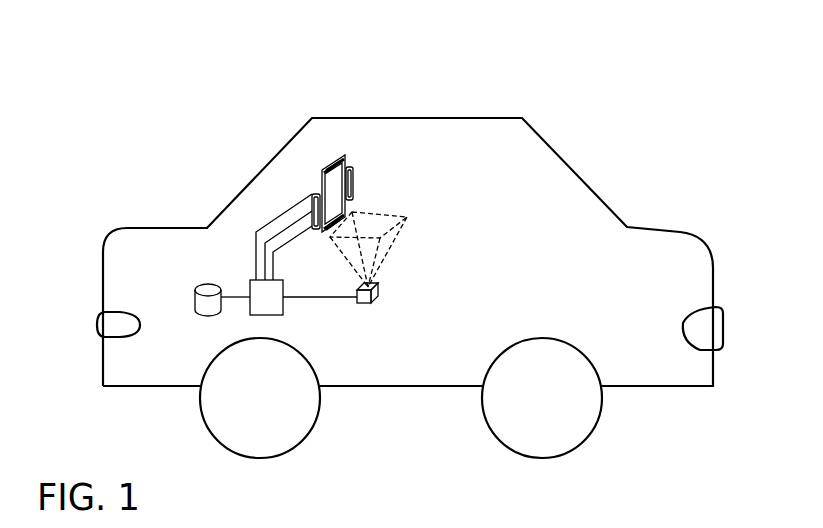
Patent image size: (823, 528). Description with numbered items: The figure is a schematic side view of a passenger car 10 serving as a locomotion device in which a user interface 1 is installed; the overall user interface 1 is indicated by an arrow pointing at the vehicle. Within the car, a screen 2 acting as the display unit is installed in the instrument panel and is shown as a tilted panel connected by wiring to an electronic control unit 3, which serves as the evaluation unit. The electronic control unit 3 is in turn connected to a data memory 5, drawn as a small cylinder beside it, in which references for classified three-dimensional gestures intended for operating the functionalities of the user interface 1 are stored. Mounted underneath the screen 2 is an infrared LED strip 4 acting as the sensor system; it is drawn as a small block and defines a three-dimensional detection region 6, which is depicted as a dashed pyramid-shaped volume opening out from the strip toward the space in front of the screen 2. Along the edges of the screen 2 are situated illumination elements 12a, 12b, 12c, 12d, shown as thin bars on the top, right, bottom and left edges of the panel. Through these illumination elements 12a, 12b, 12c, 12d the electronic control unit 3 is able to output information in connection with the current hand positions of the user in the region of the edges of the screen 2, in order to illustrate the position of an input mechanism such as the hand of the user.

The user interface 1 is at (178, 80).
The screen 2 is at (330, 197).
The electronic control unit 3 is at (260, 287).
The infrared LED strip 4 is at (373, 297).
The data memory 5 is at (203, 302).
The 3D-detection region 6 is at (388, 227).
The passenger car 10 is at (592, 190).
The illumination element 12a is at (330, 168).
The illumination element 12b is at (350, 182).
The illumination element 12c is at (327, 229).
The illumination element 12d is at (316, 213).